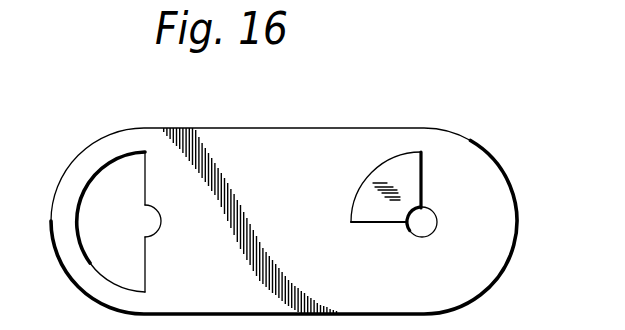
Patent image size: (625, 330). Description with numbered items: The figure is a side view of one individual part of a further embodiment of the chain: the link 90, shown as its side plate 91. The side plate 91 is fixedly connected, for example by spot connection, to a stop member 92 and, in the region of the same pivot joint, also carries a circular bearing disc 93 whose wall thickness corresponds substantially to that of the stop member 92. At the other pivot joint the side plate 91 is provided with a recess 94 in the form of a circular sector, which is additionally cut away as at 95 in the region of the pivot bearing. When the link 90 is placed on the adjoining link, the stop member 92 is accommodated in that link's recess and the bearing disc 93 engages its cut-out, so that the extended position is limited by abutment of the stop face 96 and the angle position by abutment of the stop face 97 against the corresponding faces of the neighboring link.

The link 90 is at (285, 125).
The side plate 91 is at (252, 188).
The stop member 92 is at (379, 171).
The circular bearing disc 93 is at (427, 220).
The recess 94 is at (92, 175).
The cut-away 95 is at (158, 232).
The stop face 96 is at (427, 166).
The stop face 97 is at (370, 223).